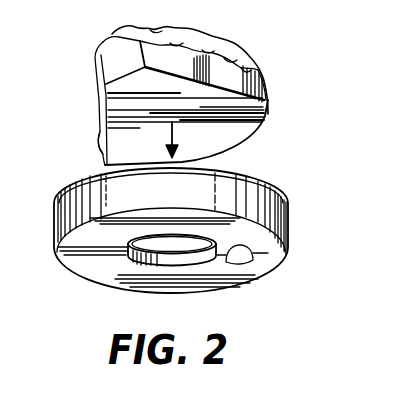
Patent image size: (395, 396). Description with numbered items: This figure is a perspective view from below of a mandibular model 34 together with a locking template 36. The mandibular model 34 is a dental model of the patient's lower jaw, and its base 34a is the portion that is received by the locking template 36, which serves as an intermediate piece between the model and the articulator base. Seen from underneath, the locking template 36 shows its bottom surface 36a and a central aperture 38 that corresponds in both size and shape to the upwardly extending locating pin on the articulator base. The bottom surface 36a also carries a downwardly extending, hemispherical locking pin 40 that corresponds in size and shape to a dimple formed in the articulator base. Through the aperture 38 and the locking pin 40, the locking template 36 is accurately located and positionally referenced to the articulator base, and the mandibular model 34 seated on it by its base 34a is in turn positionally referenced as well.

The mandibular model 34 is at (233, 80).
The base of the mandibular model 34a is at (113, 143).
The locking template 36 is at (78, 213).
The bottom surface of the locking template 36a is at (87, 260).
The central aperture 38 is at (180, 262).
The hemispherical locking pin 40 is at (247, 257).